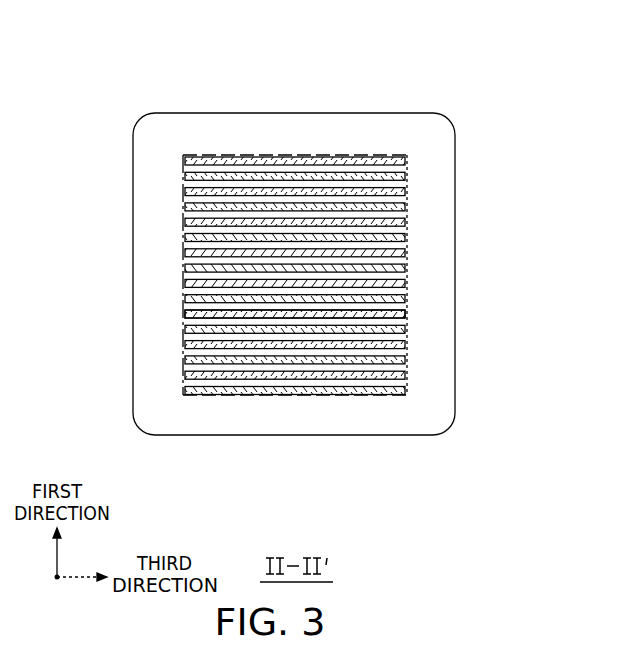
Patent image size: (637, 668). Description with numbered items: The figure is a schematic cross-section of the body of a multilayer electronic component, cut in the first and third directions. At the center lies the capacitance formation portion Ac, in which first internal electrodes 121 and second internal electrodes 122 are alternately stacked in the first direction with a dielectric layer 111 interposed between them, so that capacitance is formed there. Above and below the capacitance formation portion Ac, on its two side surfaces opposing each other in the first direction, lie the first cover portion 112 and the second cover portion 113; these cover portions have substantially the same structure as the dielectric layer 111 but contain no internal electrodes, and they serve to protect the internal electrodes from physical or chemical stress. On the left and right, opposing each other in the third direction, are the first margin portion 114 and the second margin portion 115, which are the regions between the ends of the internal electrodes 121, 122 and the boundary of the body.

The dielectric layer 111 is at (306, 218).
The first cover portion 112 is at (287, 128).
The second cover portion 113 is at (279, 428).
The first margin portion 114 is at (143, 255).
The second margin portion 115 is at (445, 253).
The first internal electrode 121 is at (357, 161).
The second internal electrode 122 is at (378, 178).
The capacitance formation portion Ac is at (407, 327).